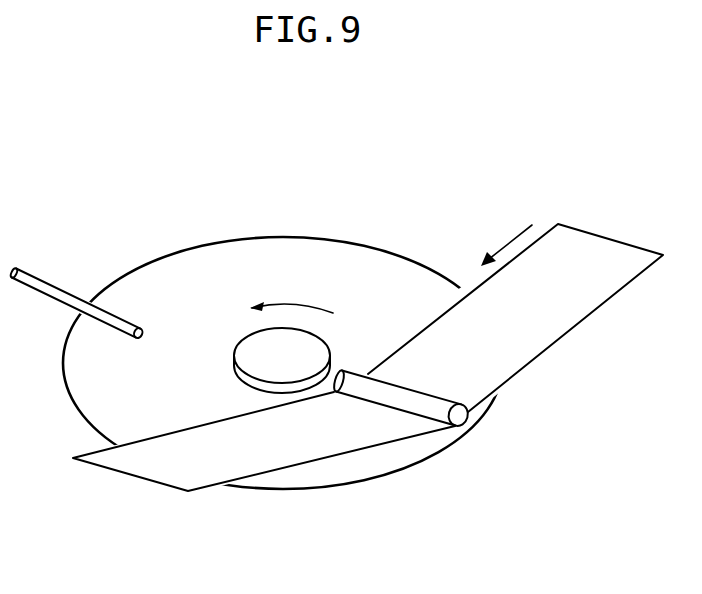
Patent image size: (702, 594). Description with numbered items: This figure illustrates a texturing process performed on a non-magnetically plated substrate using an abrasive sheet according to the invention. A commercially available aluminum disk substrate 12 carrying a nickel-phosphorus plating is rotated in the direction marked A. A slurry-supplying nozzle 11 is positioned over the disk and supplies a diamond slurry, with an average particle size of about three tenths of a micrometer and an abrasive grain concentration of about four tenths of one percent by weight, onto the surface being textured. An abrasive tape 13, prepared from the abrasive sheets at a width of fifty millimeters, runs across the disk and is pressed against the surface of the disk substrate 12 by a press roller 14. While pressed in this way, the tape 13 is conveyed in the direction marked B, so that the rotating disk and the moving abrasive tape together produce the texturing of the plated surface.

The slurry-supplying nozzle 11 is at (58, 288).
The aluminum disk substrate 12 is at (210, 260).
The tape 13 is at (553, 315).
The press roller 14 is at (472, 428).